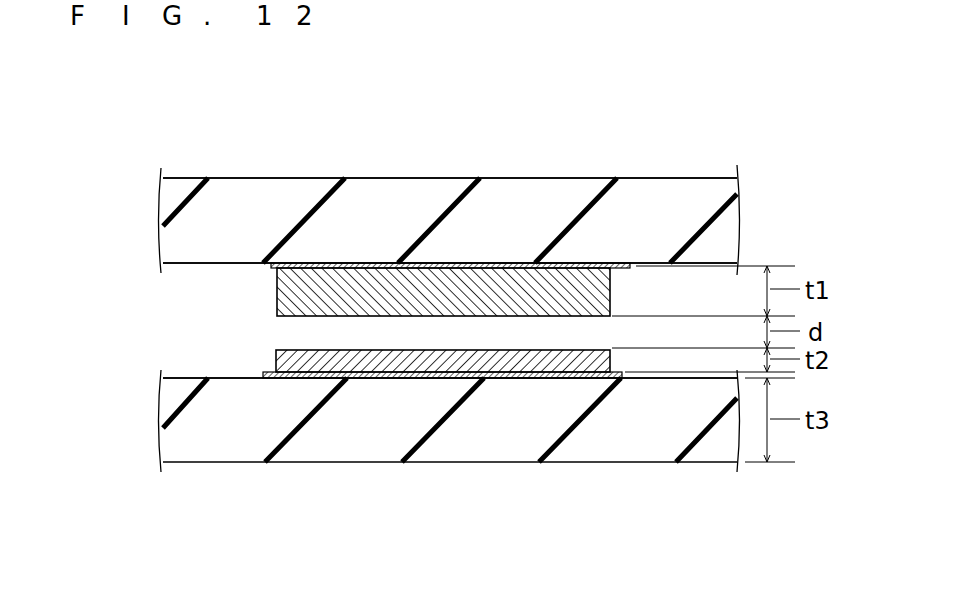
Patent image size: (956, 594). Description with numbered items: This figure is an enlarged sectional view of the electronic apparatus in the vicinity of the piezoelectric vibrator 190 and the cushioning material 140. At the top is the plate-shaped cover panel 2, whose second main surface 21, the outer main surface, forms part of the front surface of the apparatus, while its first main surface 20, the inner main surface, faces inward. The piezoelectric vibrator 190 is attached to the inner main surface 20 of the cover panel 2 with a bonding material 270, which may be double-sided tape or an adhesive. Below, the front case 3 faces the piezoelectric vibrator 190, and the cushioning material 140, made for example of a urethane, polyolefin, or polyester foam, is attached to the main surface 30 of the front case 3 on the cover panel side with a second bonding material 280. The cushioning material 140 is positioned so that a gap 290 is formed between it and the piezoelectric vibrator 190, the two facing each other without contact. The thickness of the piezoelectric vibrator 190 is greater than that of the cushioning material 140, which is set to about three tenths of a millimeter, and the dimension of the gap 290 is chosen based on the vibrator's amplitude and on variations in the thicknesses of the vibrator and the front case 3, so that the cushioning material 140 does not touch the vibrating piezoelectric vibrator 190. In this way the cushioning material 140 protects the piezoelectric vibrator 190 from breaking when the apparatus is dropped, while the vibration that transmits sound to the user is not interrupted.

The cover panel 2 is at (573, 198).
The second main surface 21 is at (197, 178).
The first main surface 20 is at (197, 263).
The front case 3 is at (577, 438).
The main surface 30 is at (197, 378).
The piezoelectric vibrator 190 is at (457, 263).
The bonding material 270 is at (362, 268).
The bonding material 280 is at (465, 372).
The cushioning material 140 is at (362, 378).
The gap 290 is at (290, 336).